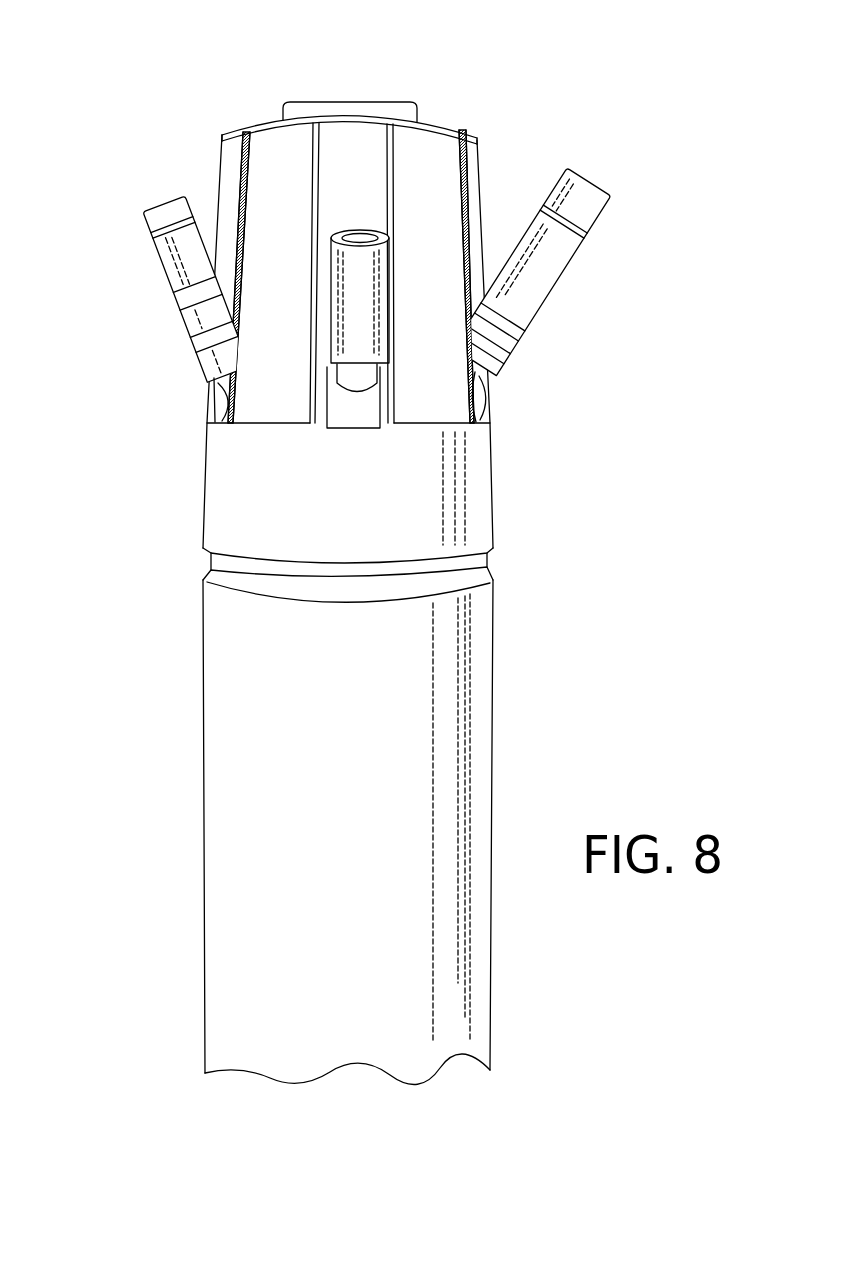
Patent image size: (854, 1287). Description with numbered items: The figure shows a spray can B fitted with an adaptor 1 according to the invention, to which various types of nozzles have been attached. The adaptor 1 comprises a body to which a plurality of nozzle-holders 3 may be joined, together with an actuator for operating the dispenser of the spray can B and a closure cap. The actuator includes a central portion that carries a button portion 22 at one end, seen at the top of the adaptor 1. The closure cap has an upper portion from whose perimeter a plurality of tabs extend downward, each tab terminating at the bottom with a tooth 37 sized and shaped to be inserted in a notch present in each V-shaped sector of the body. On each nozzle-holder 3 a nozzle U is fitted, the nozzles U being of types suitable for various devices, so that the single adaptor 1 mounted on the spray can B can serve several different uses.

The adaptor 1 is at (466, 140).
The nozzle-holder 3 is at (363, 408).
The button portion 22 is at (339, 110).
The tooth 37 is at (260, 167).
The nozzle U is at (163, 213).
The spray can B is at (252, 931).